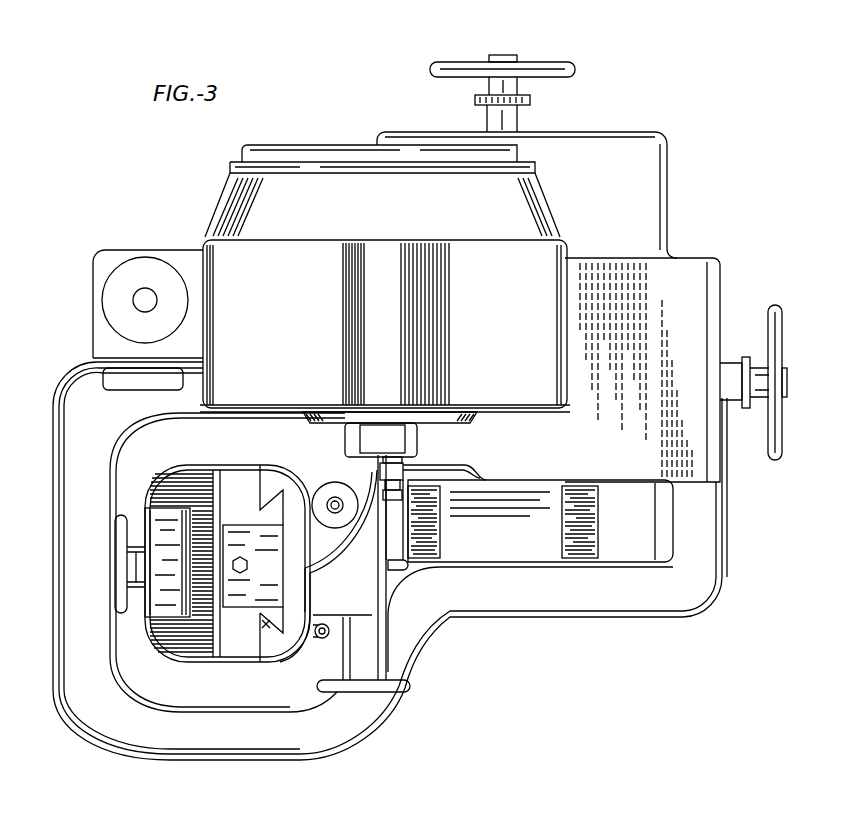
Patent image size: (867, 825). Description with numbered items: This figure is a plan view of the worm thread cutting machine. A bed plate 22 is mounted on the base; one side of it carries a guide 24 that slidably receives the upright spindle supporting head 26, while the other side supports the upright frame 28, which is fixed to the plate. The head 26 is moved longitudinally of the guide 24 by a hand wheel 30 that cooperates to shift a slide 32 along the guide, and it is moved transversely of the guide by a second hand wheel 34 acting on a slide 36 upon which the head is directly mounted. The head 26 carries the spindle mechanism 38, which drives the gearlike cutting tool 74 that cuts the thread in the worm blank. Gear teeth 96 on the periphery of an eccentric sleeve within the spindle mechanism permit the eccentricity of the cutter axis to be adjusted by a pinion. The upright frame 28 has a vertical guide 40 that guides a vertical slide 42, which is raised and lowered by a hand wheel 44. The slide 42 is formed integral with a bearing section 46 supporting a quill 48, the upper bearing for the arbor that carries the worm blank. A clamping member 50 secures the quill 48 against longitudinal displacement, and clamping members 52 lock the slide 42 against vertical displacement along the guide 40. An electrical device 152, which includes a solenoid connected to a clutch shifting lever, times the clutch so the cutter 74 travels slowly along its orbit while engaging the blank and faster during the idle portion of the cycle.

The bed plate 22 is at (165, 742).
The guide 24 is at (590, 533).
The spindle supporting head 26 is at (540, 270).
The upright frame 28 is at (222, 658).
The hand wheel 30 is at (566, 61).
The slide 32 is at (657, 188).
The hand wheel 34 is at (775, 455).
The slide 36 is at (696, 293).
The spindle mechanism 38 is at (418, 471).
The vertical guide 40 is at (263, 627).
The vertical slide 42 is at (270, 658).
The hand wheel 44 is at (120, 610).
The bearing section 46 is at (353, 536).
The quill 48 is at (333, 495).
The clamping member 50 is at (405, 571).
The clamping members 52 is at (330, 638).
The gearlike cutting tool 74 is at (405, 497).
The gear teeth 96 is at (343, 430).
The electrical device 152 is at (340, 455).